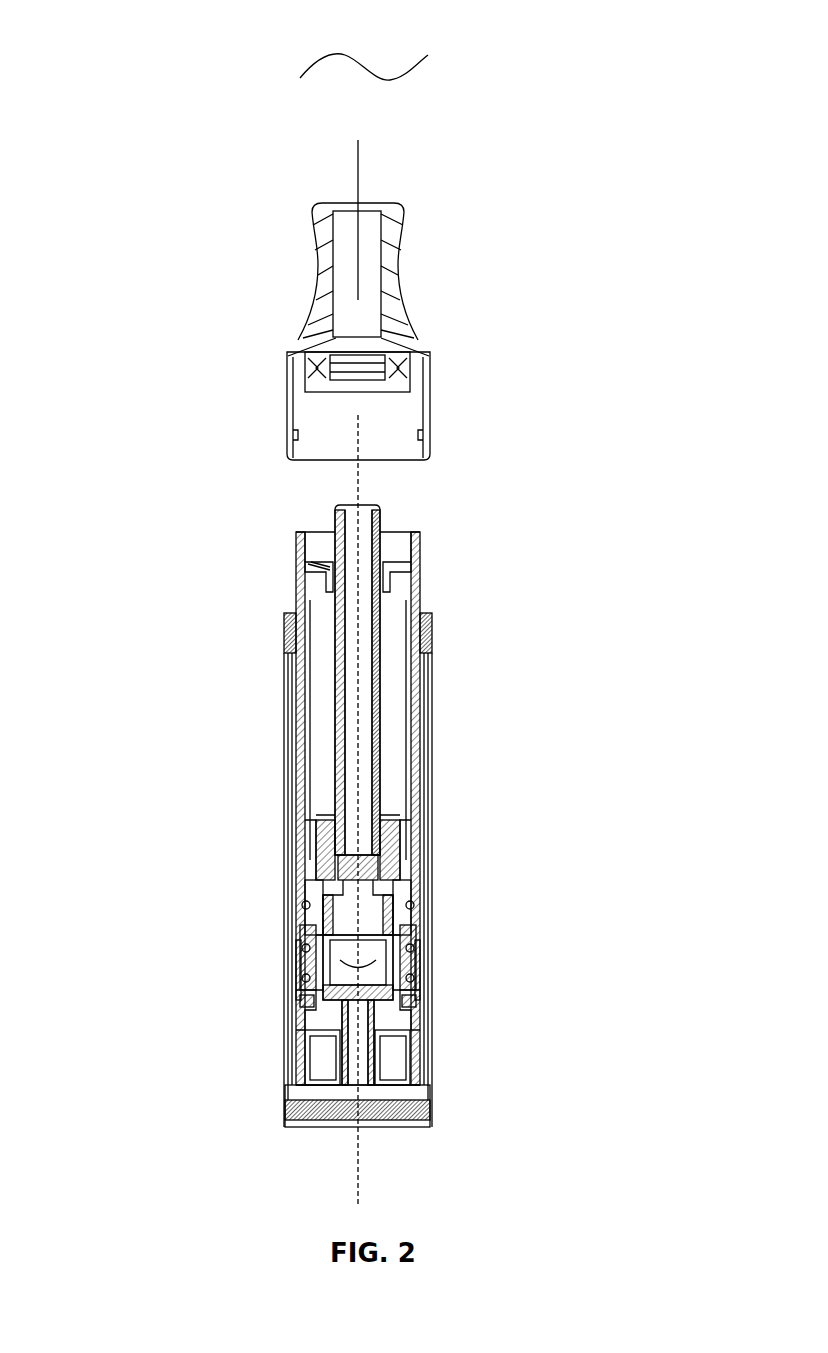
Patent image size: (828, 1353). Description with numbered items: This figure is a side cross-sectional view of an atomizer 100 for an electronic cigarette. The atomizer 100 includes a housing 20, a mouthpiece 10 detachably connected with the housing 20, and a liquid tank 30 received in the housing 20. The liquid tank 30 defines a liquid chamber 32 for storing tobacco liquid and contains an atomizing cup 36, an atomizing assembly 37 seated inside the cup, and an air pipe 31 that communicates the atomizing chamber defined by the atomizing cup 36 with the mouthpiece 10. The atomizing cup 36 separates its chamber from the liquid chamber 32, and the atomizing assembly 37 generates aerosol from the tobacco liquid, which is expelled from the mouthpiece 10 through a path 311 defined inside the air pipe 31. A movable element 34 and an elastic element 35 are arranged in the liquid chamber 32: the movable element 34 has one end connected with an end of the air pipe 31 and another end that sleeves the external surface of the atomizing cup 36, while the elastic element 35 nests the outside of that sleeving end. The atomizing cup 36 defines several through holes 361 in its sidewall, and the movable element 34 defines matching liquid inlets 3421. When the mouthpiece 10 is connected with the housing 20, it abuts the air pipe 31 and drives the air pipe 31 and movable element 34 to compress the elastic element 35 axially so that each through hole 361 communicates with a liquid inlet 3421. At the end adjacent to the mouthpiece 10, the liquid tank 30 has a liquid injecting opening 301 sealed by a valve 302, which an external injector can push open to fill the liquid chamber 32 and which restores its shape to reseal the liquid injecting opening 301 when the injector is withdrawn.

The atomizer 100 is at (364, 604).
The mouthpiece 10 is at (310, 318).
The housing 20 is at (430, 722).
The liquid tank 30 is at (300, 563).
The liquid injecting opening 301 is at (320, 548).
The valve 302 is at (400, 592).
The air pipe 31 is at (385, 520).
The path 311 is at (360, 710).
The liquid chamber 32 is at (320, 720).
The movable element 34 is at (415, 895).
The elastic element 35 is at (425, 912).
The liquid inlets 3421 is at (300, 930).
The through holes 361 is at (290, 950).
The atomizing cup 36 is at (285, 1003).
The atomizing assembly 37 is at (385, 970).